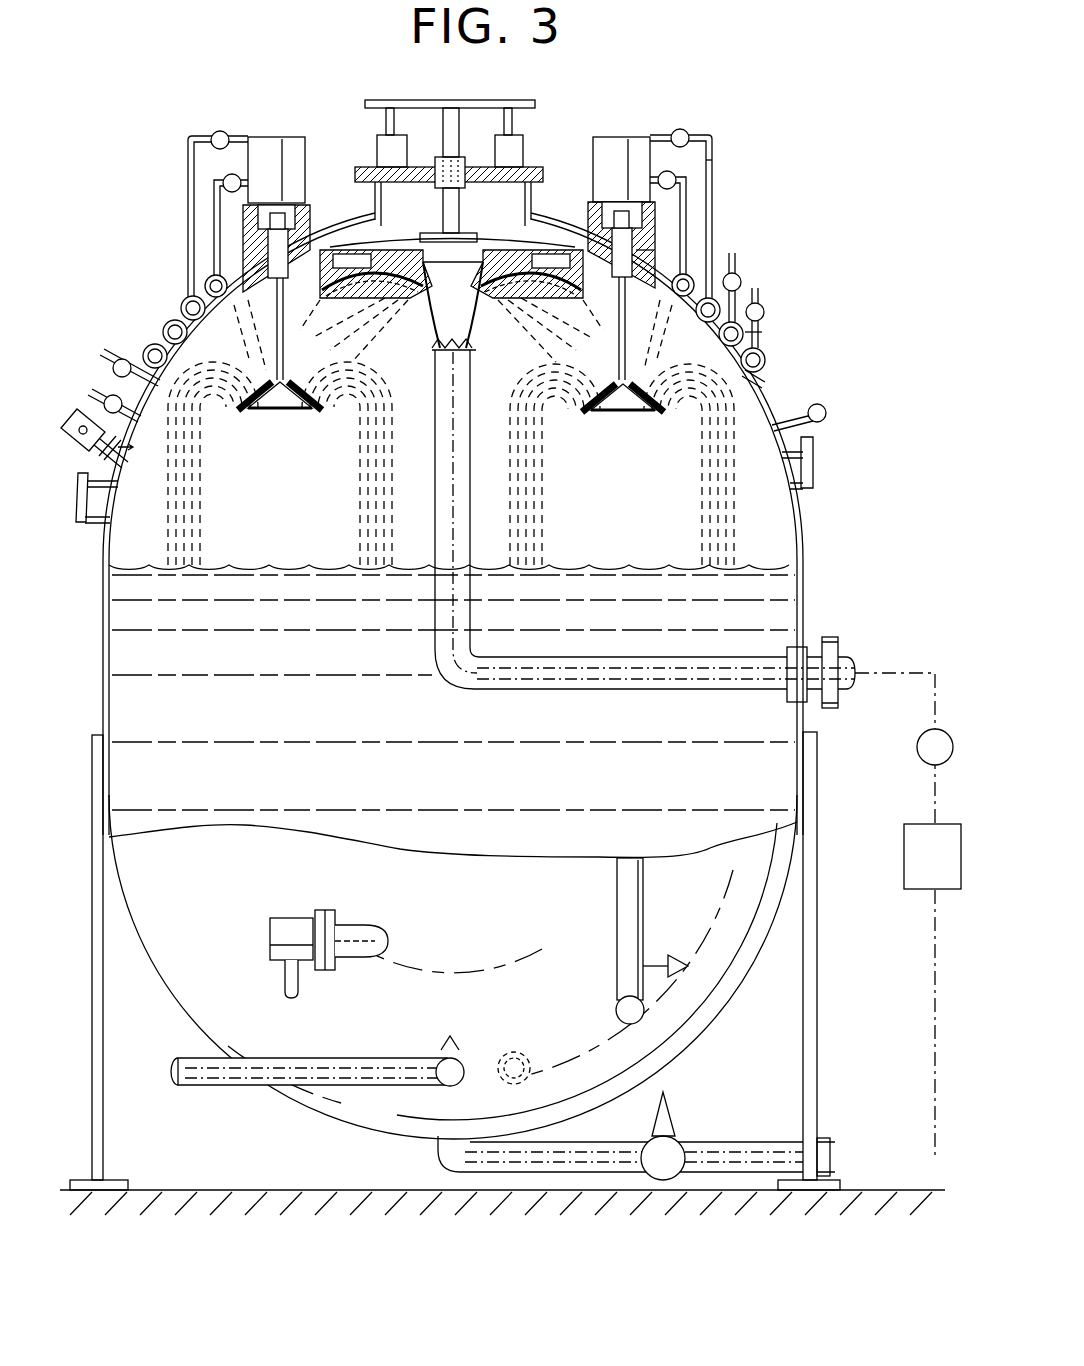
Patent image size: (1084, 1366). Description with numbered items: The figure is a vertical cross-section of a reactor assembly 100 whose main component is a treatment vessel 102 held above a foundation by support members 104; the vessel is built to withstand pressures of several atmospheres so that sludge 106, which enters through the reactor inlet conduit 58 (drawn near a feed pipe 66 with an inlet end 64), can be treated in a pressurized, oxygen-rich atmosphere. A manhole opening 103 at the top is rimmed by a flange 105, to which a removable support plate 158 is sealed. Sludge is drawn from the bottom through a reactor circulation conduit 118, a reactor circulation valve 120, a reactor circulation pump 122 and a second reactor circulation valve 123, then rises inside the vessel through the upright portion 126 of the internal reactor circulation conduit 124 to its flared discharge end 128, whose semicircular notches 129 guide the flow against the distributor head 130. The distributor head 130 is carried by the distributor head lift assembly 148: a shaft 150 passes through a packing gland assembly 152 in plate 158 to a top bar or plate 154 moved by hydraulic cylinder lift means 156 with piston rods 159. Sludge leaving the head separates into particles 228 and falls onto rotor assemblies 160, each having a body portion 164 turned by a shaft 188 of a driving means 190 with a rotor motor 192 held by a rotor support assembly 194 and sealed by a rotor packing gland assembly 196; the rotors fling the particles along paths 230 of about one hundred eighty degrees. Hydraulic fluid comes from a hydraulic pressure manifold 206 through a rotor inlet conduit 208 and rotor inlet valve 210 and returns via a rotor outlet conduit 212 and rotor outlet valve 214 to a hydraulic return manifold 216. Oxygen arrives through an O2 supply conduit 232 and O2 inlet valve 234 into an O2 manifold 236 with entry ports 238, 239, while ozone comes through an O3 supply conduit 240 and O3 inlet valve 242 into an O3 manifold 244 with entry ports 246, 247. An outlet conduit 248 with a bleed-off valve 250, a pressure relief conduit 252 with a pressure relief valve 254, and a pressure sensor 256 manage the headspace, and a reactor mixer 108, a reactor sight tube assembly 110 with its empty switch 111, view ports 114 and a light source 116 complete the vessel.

The reactor inlet conduit 58 is at (528, 1074).
The inlet end 64 is at (445, 1058).
The feed pipe 66 is at (232, 1078).
The reactor assembly 100 is at (868, 589).
The treatment vessel 102 is at (800, 522).
The manhole opening 103 is at (390, 212).
The support members 104 is at (100, 1108).
The flange 105 is at (528, 185).
The sludge 106 is at (305, 661).
The reactor mixer 108 is at (296, 925).
The reactor sight tube assembly 110 is at (616, 890).
The low level or empty switch 111 is at (656, 958).
The view ports 114 is at (80, 490).
The light source 116 is at (76, 420).
The reactor circulation conduit 118 is at (560, 1152).
The reactor circulation valve 120 is at (665, 1152).
The reactor circulation pump 122 is at (912, 832).
The reactor circulation valve 123 is at (918, 745).
The internal reactor circulation conduit 124 is at (585, 668).
The upright portion 126 is at (448, 598).
The discharge end 128 is at (437, 354).
The notches 129 is at (438, 345).
The distributor head 130 is at (462, 279).
The distributor head lift assembly 148 is at (305, 106).
The shaft 150 is at (452, 125).
The packing gland assembly 152 is at (440, 188).
The top bar or plate 154 is at (432, 100).
The hydraulic cylinder lift means 156 is at (377, 146).
The removable support plate 158 is at (362, 174).
The piston rods 159 is at (386, 120).
The rotor assembly 160 is at (288, 404).
The body portion 164 is at (264, 410).
The shaft 188 is at (274, 318).
The driving means 190 is at (205, 128).
The rotor motor 192 is at (622, 150).
The rotor support assembly 194 is at (648, 232).
The rotor packing gland assembly 196 is at (272, 250).
The hydraulic pressure manifold 206 is at (204, 283).
The rotor inlet conduit 208 is at (660, 244).
The remote controlled rotor inlet valve 210 is at (676, 176).
The rotor outlet conduit 212 is at (713, 194).
The remote controlled rotor outlet valve 214 is at (690, 133).
The hydraulic return manifold 216 is at (181, 304).
The sludge particles 228 is at (268, 322).
The path of the particles 230 is at (194, 497).
The O2 supply conduit 232 is at (762, 295).
The remote controlled O2 inlet valve 234 is at (764, 314).
The O2 manifold 236 is at (765, 360).
The O2 entry port 238 is at (760, 380).
The O2 entry port 239 is at (168, 356).
The O3 supply conduit 240 is at (740, 262).
The remote controlled O3 inlet valve 242 is at (742, 280).
The O3 manifold 244 is at (762, 340).
The O3 entry port 246 is at (719, 336).
The O3 entry port 247 is at (188, 333).
The outlet conduit 248 is at (100, 355).
The remote controlled outlet or bleed-off valve 250 is at (120, 360).
The pressure relief conduit 252 is at (90, 392).
The pressure relief valve 254 is at (106, 398).
The pressure sensor 256 is at (822, 410).